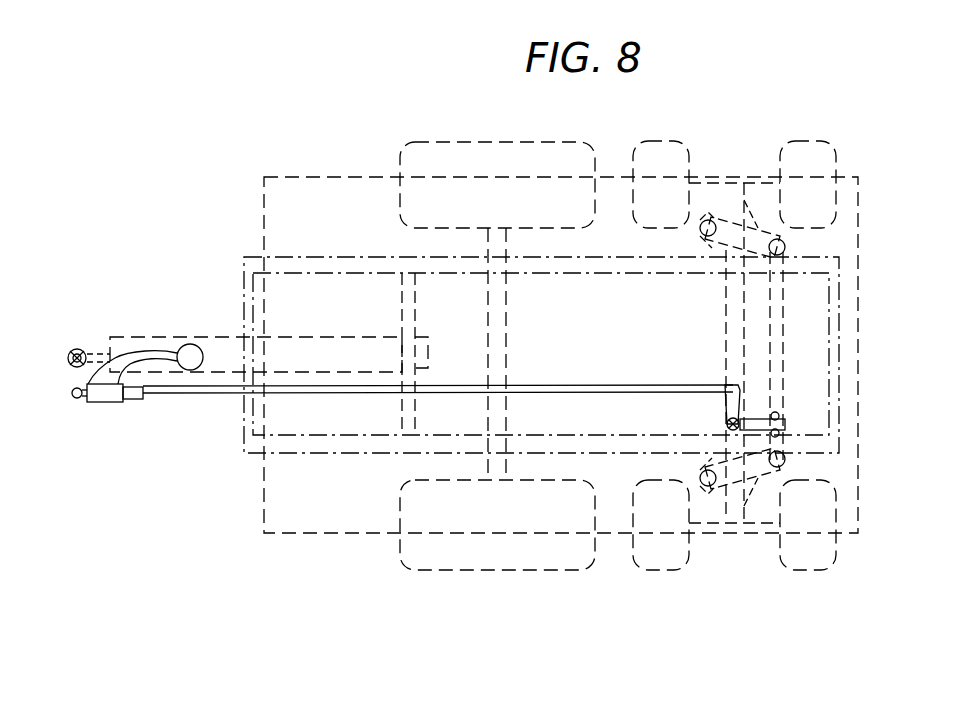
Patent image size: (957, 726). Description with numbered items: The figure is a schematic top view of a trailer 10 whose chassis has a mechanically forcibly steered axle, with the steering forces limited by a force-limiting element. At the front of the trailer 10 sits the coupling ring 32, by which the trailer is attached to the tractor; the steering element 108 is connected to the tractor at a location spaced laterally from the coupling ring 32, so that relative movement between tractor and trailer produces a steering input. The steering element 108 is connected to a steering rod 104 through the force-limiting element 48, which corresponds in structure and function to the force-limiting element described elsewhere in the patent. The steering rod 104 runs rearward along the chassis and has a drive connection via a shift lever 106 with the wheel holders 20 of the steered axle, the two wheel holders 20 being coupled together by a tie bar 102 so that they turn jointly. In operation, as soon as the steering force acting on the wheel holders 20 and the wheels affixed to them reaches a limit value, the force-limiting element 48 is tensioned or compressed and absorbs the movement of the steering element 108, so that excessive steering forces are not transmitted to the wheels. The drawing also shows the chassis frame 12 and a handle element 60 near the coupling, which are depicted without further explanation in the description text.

The trailer 10 is at (284, 552).
The frame 12 is at (378, 443).
The wheel holders 20 is at (732, 203).
The coupling ring 32 is at (78, 349).
The force-limiting element 48 is at (105, 403).
The handle lever 60 is at (192, 344).
The tie bar 102 is at (783, 407).
The steering rod 104 is at (556, 384).
The shift lever 106 is at (738, 407).
The steering element 108 is at (75, 399).